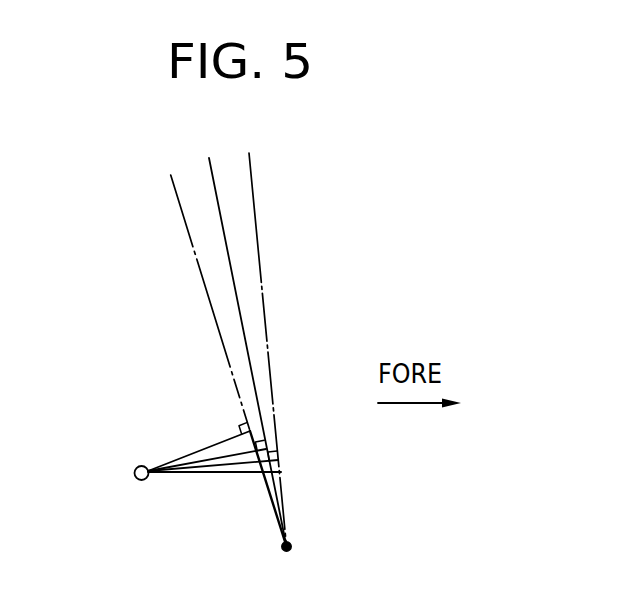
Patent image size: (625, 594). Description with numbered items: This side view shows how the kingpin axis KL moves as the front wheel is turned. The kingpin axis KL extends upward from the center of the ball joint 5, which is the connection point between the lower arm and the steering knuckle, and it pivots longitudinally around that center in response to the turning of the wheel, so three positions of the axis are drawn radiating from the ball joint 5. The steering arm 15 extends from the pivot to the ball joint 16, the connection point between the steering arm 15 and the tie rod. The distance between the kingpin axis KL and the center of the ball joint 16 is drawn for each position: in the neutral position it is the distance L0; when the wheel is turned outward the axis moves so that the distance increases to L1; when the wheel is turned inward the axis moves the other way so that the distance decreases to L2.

The ball joint 5 is at (291, 546).
The steering arm 15 is at (210, 473).
The ball joint 16 is at (134, 472).
The kingpin axis KL is at (225, 238).
The distance in the neutral position L0 is at (227, 456).
The distance when turned outward L1 is at (242, 473).
The distance when turned inward L2 is at (193, 453).